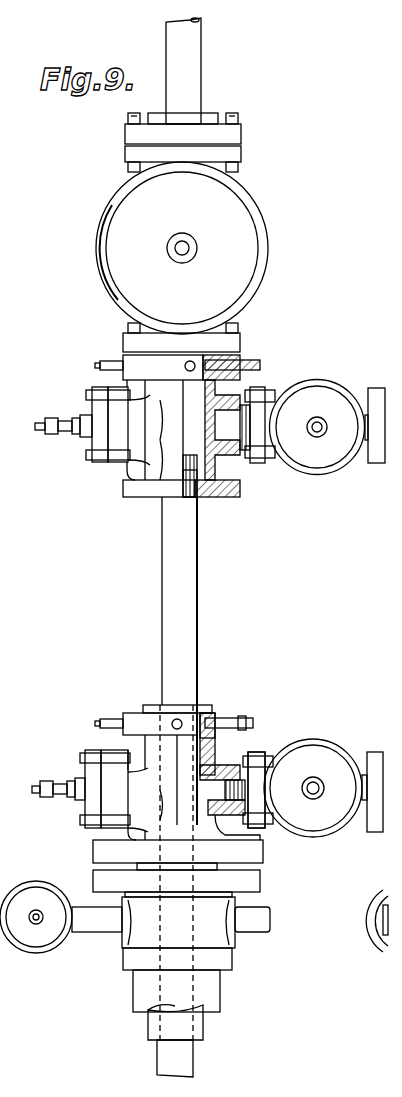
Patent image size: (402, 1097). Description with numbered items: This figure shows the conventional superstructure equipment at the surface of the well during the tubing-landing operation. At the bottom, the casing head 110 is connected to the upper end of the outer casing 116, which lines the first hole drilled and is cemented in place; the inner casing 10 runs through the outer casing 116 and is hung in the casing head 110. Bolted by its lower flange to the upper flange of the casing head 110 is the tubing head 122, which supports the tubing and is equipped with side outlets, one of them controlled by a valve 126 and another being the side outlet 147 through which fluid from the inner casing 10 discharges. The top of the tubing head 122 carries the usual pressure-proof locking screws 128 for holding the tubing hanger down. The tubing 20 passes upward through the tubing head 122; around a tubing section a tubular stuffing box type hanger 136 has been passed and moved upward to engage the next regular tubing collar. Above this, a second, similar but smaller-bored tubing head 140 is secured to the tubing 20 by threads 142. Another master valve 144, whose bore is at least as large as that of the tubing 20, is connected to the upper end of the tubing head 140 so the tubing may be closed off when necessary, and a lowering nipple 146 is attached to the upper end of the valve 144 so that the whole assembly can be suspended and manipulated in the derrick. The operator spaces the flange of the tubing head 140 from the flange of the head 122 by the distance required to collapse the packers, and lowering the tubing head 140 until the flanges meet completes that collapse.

The lowering nipple 146 is at (192, 86).
The master valve 144 is at (242, 233).
The tubing head 140 is at (135, 432).
The threads 142 is at (203, 497).
The tubing 20 is at (188, 617).
The tubular stuffing box type hanger 136 is at (228, 690).
The pressure-proof locking screws 128 is at (243, 717).
The side outlet 147 is at (250, 752).
The valve 126 is at (303, 820).
The tubing head 122 is at (148, 822).
The casing head 110 is at (153, 932).
The outer casing 116 is at (212, 992).
The inner casing 10 is at (197, 1030).